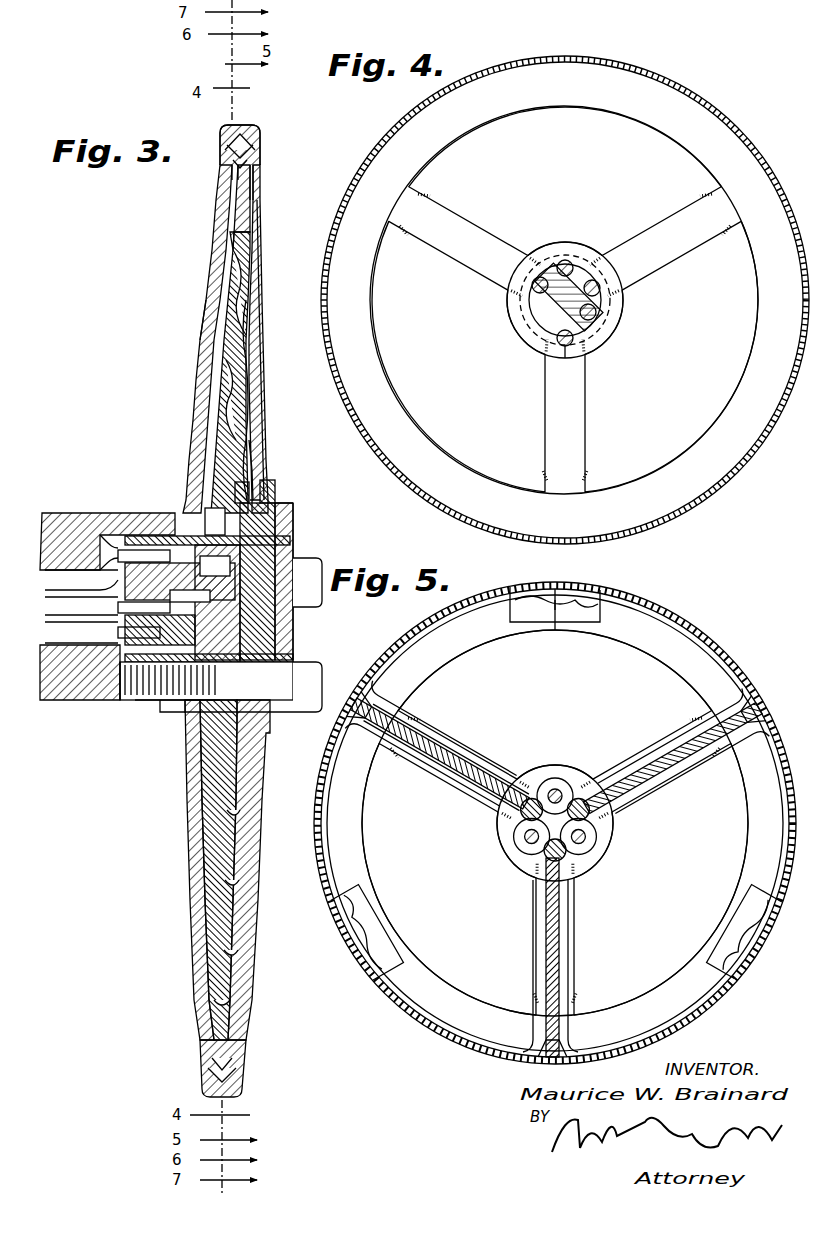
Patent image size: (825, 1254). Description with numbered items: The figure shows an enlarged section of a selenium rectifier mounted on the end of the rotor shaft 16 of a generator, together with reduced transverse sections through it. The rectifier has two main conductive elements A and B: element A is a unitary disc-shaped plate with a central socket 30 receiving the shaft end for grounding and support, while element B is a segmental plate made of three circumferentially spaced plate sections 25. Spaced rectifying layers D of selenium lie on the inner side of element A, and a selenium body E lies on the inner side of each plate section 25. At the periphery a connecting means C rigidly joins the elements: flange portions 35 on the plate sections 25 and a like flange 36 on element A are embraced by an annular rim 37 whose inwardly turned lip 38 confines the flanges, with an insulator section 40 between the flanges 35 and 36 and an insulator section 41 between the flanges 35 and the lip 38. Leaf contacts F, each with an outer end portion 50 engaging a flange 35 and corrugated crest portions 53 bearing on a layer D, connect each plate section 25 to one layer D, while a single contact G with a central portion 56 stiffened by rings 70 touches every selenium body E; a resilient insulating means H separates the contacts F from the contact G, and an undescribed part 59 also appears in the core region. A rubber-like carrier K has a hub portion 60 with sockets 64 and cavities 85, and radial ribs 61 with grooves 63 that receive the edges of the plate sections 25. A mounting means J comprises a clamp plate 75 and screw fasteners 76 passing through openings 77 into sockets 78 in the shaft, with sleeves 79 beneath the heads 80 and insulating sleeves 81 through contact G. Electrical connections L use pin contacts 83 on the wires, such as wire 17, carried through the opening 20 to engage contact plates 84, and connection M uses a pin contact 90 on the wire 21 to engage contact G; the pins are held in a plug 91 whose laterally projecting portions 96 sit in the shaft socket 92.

In FIG. 3, the shaft 16 is at (44, 513).
In FIG. 3, the wire 17 is at (81, 580).
In FIG. 3, the central opening 20 is at (70, 628).
In FIG. 3, the wire 21 is at (107, 605).
In FIG. 3, the plate sections 25 is at (265, 334).
In FIG. 5, the plate sections 25 is at (570, 823).
In FIG. 3, the central socket 30 is at (208, 508).
In FIG. 3, the flange portions 35 is at (250, 160).
In FIG. 5, the flange portions 35 is at (555, 823).
In FIG. 3, the flange 36 is at (228, 150).
In FIG. 3, the rim 37 is at (240, 127).
In FIG. 4, the rim 37 is at (577, 54).
In FIG. 5, the rim 37 is at (512, 580).
In FIG. 3, the lip 38 is at (260, 144).
In FIG. 3, the insulator section 40 is at (228, 162).
In FIG. 3, the insulator section 41 is at (254, 176).
In FIG. 3, the outer end portion 50 is at (238, 205).
In FIG. 5, the outer end portion 50 is at (560, 612).
In FIG. 3, the crest portions 53 is at (224, 392).
In FIG. 3, the central portion 56 is at (276, 490).
In FIG. 3, the core filling 59 is at (250, 318).
In FIG. 3, the hub portion 60 is at (275, 630).
In FIG. 5, the hub portion 60 is at (545, 835).
In FIG. 3, the ribs 61 is at (250, 942).
In FIG. 5, the ribs 61 is at (530, 790).
In FIG. 5, the grooves 63 is at (450, 725).
In FIG. 3, the sockets 64 is at (250, 490).
In FIG. 5, the sockets 64 is at (578, 798).
In FIG. 3, the stiffening rings 70 is at (294, 505).
In FIG. 3, the clamp plate 75 is at (293, 656).
In FIG. 3, the screw fasteners 76 is at (160, 700).
In FIG. 4, the screw fasteners 76 is at (605, 355).
In FIG. 5, the screw fasteners 76 is at (580, 860).
In FIG. 3, the openings 77 is at (178, 700).
In FIG. 3, the sockets 78 is at (160, 680).
In FIG. 3, the sleeves 79 is at (166, 672).
In FIG. 3, the heads 80 is at (296, 680).
In FIG. 3, the sleeve 81 is at (200, 735).
In FIG. 3, the pin contacts 83 is at (160, 545).
In FIG. 4, the pin contacts 83 is at (568, 262).
In FIG. 3, the contact plates 84 is at (307, 582).
In FIG. 3, the cavities 85 is at (293, 518).
In FIG. 3, the pin contact 90 is at (128, 662).
In FIG. 3, the plug 91 is at (118, 632).
In FIG. 4, the plug 91 is at (603, 300).
In FIG. 3, the socket opening 92 is at (120, 550).
In FIG. 4, the laterally projecting portions 96 is at (620, 350).
In FIG. 3, the main conductive element A is at (203, 333).
In FIG. 4, the main conductive element A is at (352, 222).
In FIG. 3, the main conductive element B is at (266, 290).
In FIG. 5, the main conductive element B is at (690, 646).
In FIG. 3, the connecting means C is at (264, 134).
In FIG. 4, the connecting means C is at (664, 84).
In FIG. 5, the connecting means C is at (664, 602).
In FIG. 3, the rectifying layers D is at (229, 339).
In FIG. 4, the rectifying layers D is at (565, 319).
In FIG. 3, the selenium body E is at (258, 396).
In FIG. 5, the selenium body E is at (554, 842).
In FIG. 3, the contacts F is at (220, 237).
In FIG. 5, the contacts F is at (582, 595).
In FIG. 3, the single contact G is at (262, 470).
In FIG. 3, the resilient insulating means H is at (228, 420).
In FIG. 3, the mounting means J is at (296, 553).
In FIG. 3, the carrier K is at (270, 762).
In FIG. 5, the carrier K is at (694, 760).
In FIG. 3, the electrical connections L is at (185, 570).
In FIG. 4, the electrical connections L is at (525, 318).
In FIG. 3, the electrical connection M is at (200, 662).